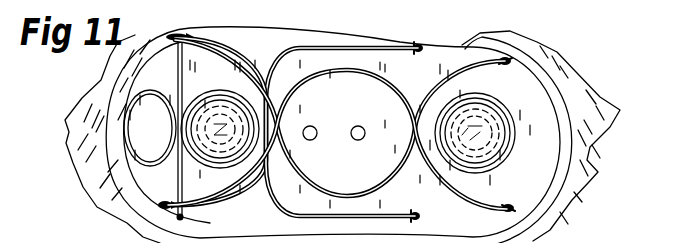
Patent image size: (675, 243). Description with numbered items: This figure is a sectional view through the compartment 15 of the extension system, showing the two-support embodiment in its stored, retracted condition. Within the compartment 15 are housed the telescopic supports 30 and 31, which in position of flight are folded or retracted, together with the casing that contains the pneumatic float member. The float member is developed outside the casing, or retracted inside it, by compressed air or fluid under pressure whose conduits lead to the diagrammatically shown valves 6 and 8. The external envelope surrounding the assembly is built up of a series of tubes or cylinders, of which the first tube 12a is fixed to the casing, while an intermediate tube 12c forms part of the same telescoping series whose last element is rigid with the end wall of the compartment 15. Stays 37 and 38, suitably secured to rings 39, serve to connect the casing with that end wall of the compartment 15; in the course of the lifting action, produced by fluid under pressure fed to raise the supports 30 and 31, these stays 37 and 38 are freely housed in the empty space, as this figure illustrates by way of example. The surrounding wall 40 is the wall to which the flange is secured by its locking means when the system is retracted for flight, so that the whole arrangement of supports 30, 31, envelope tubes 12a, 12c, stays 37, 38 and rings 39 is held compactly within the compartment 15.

The valve 6 is at (358, 126).
The valve 8 is at (314, 127).
The tube 12a is at (220, 95).
The tube 12c is at (221, 170).
The compartment 15 is at (252, 236).
The support 30 is at (229, 122).
The support 31 is at (488, 141).
The stay 37 is at (341, 74).
The stay 38 is at (172, 166).
The ring 39 is at (168, 40).
The wall 40 is at (565, 207).